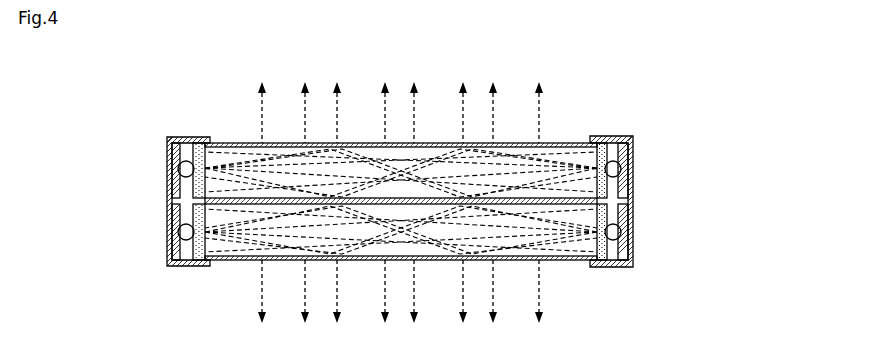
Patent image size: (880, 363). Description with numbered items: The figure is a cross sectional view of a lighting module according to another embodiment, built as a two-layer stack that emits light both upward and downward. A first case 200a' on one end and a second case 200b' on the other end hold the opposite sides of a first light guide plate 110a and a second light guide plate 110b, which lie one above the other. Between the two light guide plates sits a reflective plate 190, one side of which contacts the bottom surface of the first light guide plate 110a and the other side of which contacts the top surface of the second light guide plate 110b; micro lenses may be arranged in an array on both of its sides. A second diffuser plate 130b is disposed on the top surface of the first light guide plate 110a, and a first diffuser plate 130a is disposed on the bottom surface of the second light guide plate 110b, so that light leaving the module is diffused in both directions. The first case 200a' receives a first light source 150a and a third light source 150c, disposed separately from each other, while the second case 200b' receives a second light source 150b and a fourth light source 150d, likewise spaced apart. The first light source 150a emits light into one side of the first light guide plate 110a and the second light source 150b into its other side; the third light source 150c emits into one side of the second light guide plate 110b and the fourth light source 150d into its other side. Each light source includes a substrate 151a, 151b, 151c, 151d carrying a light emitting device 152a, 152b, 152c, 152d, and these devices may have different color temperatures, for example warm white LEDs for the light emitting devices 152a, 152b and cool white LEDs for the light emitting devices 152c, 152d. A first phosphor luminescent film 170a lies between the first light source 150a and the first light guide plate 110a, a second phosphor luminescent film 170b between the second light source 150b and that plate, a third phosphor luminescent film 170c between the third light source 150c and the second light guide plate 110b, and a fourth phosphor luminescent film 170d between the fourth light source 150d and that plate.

The first light guide plate 110a is at (351, 157).
The second light guide plate 110b is at (360, 250).
The first diffuser plate 130a is at (558, 261).
The second diffuser plate 130b is at (430, 143).
The reflective plate 190 is at (442, 204).
The first light source 150a is at (676, 163).
The second light source 150b is at (123, 166).
The third light source 150c is at (678, 232).
The fourth light source 150d is at (123, 233).
The substrate 151a is at (631, 169).
The substrate 151b is at (179, 169).
The substrate 151c is at (631, 232).
The substrate 151d is at (179, 232).
The light emitting device 152a is at (632, 152).
The light emitting device 152b is at (172, 153).
The light emitting device 152c is at (632, 248).
The light emitting device 152d is at (172, 247).
The first phosphor luminescent film 170a is at (598, 148).
The second phosphor luminescent film 170b is at (207, 144).
The third phosphor luminescent film 170c is at (606, 266).
The fourth phosphor luminescent film 170d is at (204, 261).
The first case 200a' is at (615, 180).
The second case 200b' is at (179, 174).